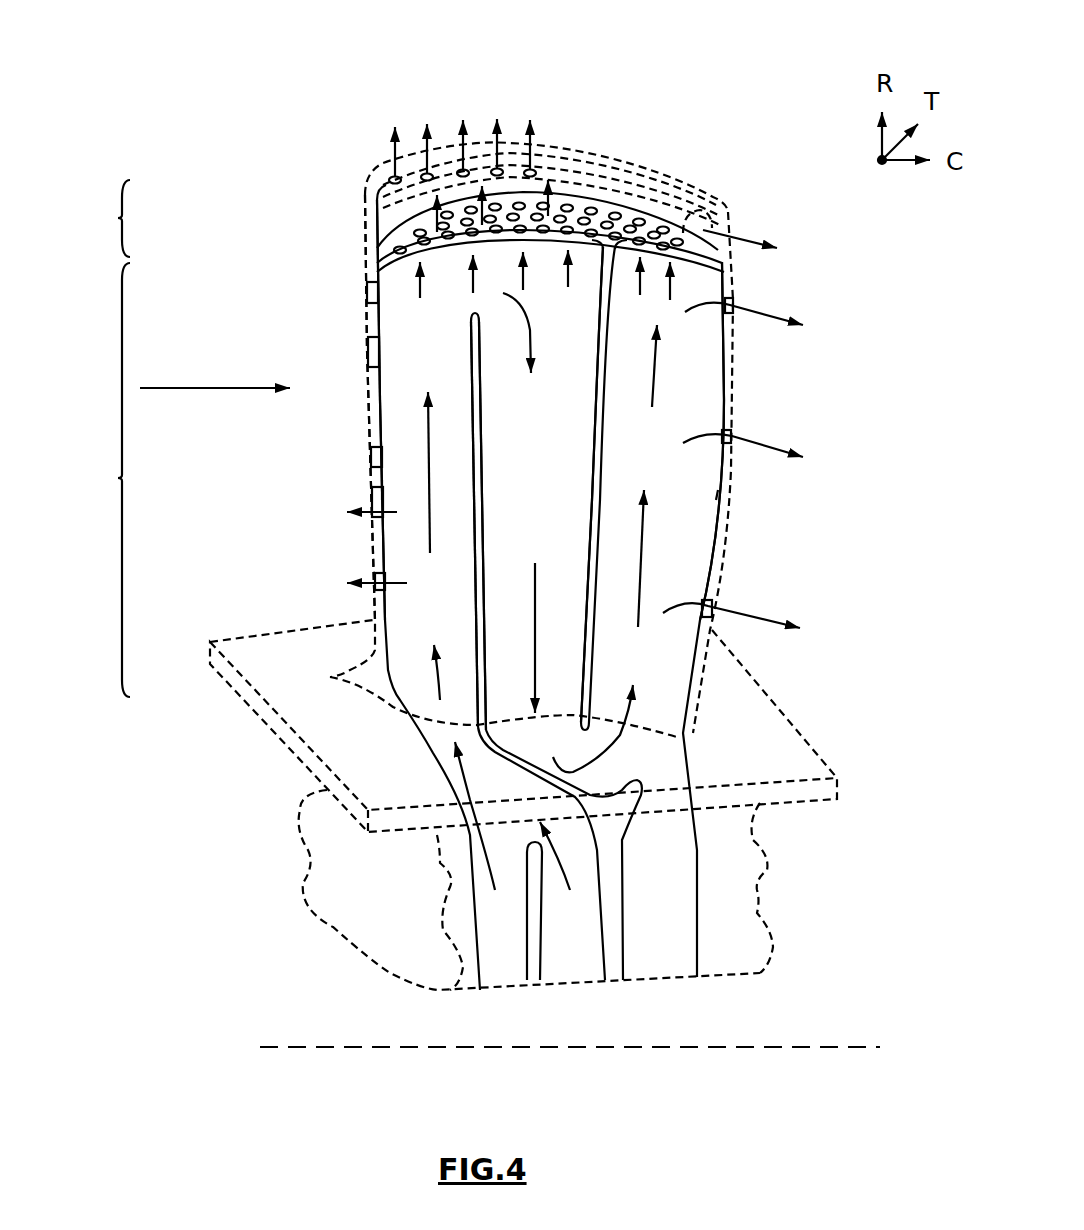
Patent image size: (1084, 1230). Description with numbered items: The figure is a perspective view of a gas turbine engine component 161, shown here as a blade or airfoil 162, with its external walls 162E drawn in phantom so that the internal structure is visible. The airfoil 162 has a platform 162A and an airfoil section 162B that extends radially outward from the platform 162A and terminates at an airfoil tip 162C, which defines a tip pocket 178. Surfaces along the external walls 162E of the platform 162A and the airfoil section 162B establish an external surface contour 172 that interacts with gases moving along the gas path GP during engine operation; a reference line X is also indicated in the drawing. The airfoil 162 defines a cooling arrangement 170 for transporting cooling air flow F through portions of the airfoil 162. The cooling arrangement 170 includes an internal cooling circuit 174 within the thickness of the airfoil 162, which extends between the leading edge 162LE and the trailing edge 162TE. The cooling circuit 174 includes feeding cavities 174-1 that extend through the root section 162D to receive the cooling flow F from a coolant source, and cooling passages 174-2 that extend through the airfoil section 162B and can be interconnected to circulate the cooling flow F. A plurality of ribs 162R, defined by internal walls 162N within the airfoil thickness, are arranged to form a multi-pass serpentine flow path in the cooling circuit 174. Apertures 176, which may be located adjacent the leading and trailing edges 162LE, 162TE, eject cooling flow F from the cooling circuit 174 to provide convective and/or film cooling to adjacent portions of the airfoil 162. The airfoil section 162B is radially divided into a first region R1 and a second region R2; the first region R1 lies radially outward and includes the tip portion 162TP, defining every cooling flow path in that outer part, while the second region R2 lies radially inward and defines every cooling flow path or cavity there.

The gas turbine engine component 161 is at (370, 407).
The airfoil 162 is at (225, 80).
The cooling arrangement 170 is at (335, 172).
The airfoil tip 162C is at (540, 140).
The tip pocket 178 is at (565, 162).
The tip portion 162TP is at (363, 218).
The leading edge 162LE is at (368, 315).
The trailing edge 162TE is at (735, 370).
The airfoil section 162B is at (367, 425).
The external walls 162E is at (378, 490).
The apertures 176 is at (368, 285).
The external surface contour 172 is at (367, 565).
The internal cooling circuit 174 is at (380, 535).
The feeding cavities 174-1 is at (647, 968).
The cooling passages 174-2 is at (700, 540).
The ribs 162R is at (480, 550).
The internal walls 162N is at (593, 478).
The platform 162A is at (233, 687).
The root section 162D is at (760, 890).
The engine axis X is at (820, 1047).
The gas path GP is at (207, 388).
The first region R1 is at (120, 217).
The second region R2 is at (120, 478).
The cooling air flow F is at (465, 150).